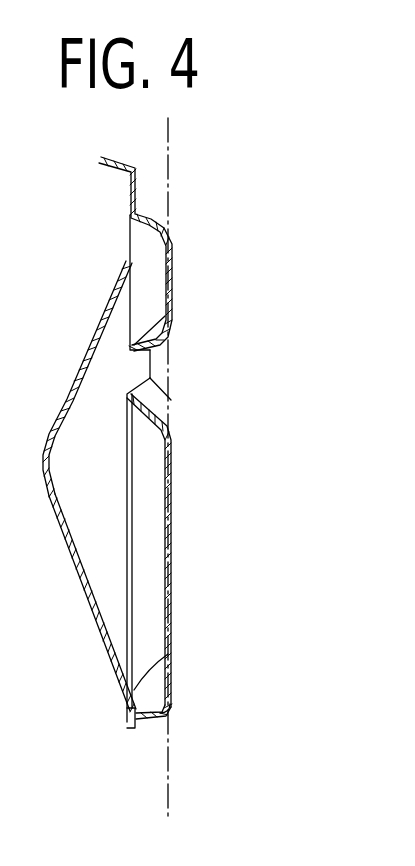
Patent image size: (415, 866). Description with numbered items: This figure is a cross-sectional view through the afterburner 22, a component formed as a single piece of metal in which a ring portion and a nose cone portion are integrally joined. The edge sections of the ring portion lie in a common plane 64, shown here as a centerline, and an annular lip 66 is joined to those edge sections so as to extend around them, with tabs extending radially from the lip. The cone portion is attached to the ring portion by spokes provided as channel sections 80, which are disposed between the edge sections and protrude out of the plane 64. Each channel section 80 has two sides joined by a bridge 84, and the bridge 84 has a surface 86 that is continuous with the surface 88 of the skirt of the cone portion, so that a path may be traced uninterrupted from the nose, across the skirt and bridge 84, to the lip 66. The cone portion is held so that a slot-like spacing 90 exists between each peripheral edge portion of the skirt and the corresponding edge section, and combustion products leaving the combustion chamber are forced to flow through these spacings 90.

The afterburner 22 is at (88, 344).
The common plane 64 is at (167, 808).
The annular lip 66 is at (148, 216).
The channel section 80 is at (128, 712).
The bridge 84 is at (125, 698).
The surface of bridge 86 is at (130, 719).
The surface of skirt 88 is at (87, 581).
The slot-like spacing 90 is at (130, 261).